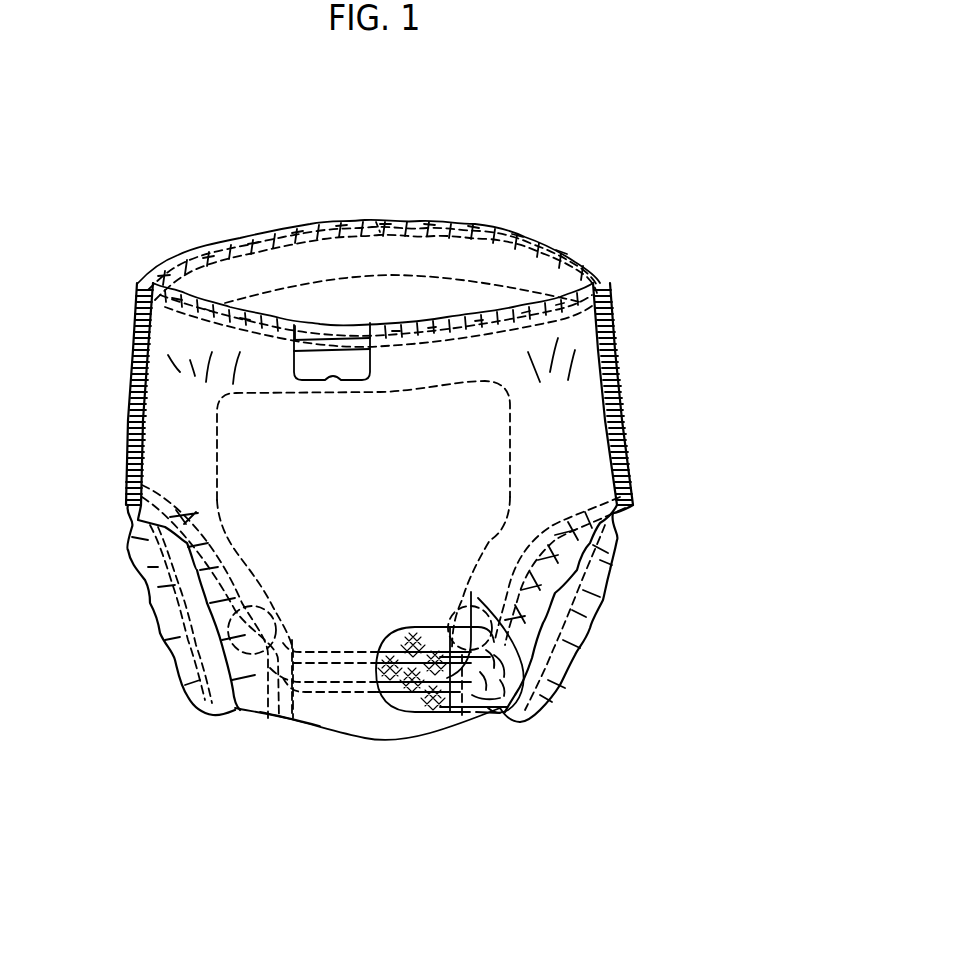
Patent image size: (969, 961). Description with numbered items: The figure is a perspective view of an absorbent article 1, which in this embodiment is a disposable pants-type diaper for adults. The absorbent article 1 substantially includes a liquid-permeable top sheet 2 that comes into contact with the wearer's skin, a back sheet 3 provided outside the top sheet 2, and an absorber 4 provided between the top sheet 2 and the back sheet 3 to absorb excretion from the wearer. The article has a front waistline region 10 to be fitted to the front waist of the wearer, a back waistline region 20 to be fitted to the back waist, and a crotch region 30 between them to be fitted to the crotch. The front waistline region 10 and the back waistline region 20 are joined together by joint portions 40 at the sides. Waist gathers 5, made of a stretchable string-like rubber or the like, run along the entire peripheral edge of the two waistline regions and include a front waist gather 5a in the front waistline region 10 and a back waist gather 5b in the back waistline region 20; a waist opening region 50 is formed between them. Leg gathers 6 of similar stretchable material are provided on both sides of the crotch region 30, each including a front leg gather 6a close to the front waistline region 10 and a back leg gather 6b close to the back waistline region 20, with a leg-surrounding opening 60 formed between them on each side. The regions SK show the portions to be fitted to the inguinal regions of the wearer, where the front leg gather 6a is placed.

The absorbent article 1 is at (551, 157).
The top sheet 2 is at (458, 705).
The back sheet 3 is at (360, 720).
The absorber 4 is at (411, 707).
The waist gathers 5 is at (385, 158).
The front waist gather 5a is at (311, 336).
The back waist gather 5b is at (378, 220).
The leg gathers 6 is at (583, 733).
The front leg gather 6a is at (498, 705).
The back leg gather 6b is at (483, 707).
The front waistline region 10 is at (183, 456).
The back waistline region 20 is at (548, 244).
The crotch region 30 is at (303, 738).
The joint portions 40 is at (140, 390).
The waist opening region 50 is at (247, 270).
The leg-surrounding opening 60 is at (198, 625).
The region Sk SK is at (476, 598).